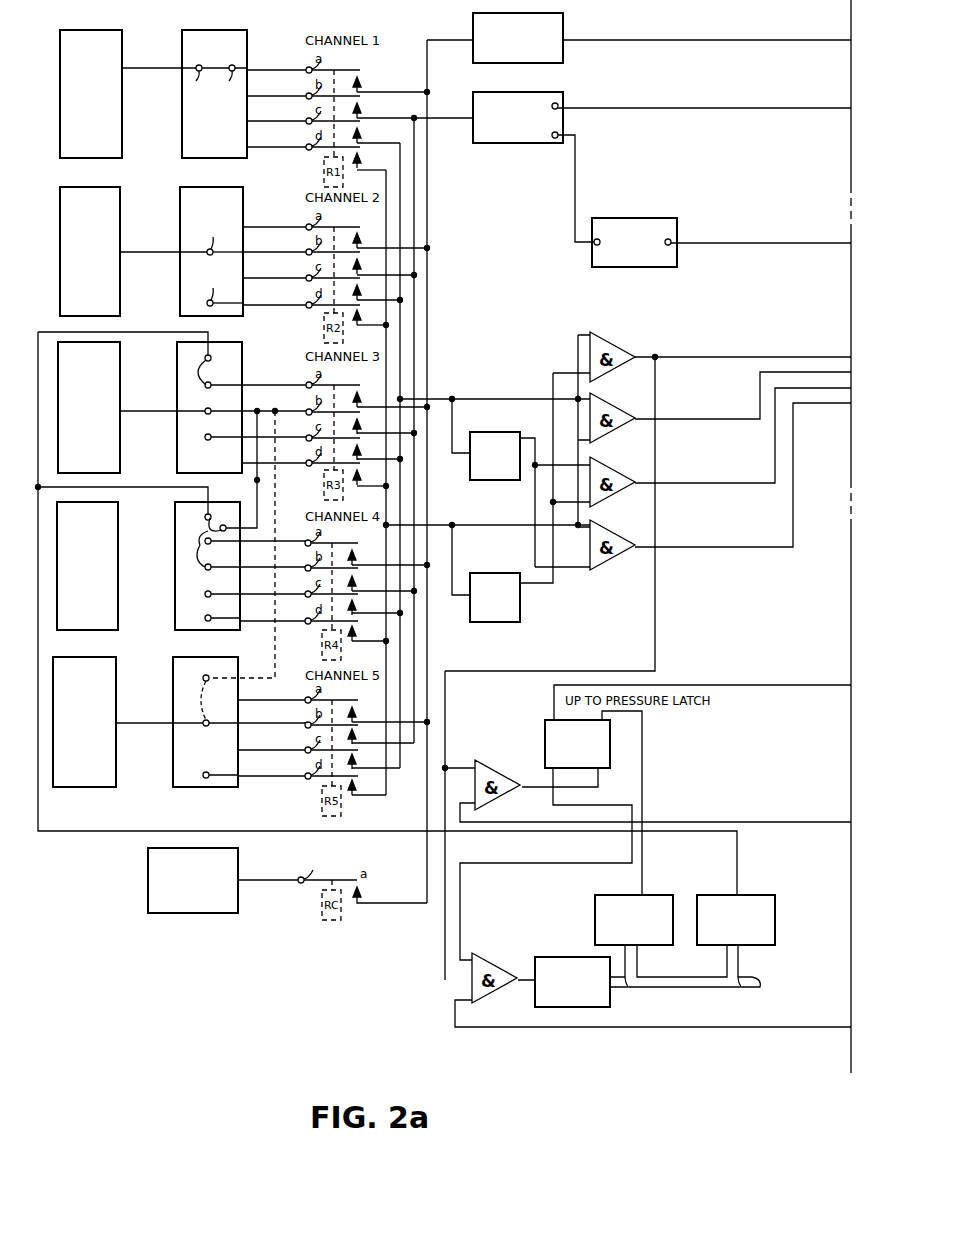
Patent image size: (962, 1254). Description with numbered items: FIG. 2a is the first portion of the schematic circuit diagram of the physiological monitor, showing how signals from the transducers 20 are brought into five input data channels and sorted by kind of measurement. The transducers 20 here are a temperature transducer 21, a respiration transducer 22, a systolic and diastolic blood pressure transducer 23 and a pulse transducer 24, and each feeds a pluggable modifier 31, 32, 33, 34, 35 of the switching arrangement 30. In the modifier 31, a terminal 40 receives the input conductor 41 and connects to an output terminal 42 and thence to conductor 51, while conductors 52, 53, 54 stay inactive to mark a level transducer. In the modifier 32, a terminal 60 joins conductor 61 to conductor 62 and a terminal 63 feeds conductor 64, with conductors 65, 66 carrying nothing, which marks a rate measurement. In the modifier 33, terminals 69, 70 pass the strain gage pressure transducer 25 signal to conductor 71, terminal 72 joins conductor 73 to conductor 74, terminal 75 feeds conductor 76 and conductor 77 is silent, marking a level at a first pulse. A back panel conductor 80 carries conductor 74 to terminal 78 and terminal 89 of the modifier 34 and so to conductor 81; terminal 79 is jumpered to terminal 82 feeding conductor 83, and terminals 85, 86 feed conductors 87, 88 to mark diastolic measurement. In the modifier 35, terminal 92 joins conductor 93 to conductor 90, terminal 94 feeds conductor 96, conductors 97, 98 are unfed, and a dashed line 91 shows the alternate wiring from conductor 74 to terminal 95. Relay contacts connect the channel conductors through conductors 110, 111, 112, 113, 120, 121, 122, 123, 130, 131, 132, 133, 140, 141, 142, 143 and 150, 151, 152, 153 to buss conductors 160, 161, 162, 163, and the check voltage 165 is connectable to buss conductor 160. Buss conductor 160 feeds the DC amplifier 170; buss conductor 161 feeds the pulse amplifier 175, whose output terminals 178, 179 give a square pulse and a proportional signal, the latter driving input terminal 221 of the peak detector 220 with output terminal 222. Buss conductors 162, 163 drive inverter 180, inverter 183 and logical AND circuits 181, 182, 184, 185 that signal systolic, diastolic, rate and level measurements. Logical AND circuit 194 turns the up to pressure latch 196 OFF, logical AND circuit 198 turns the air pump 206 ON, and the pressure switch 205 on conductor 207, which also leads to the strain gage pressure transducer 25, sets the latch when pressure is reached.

The transducers 20 is at (40, 330).
The temperature transducer 21 is at (124, 32).
The respiration transducer 22 is at (118, 298).
The systolic and diastolic blood pressure transducer 23 is at (122, 368).
The pulse transducer 24 is at (117, 758).
The strain gage pressure transducer 25 is at (776, 897).
The switching arrangement 30 is at (157, 778).
The modifier 31 is at (248, 32).
The modifier 32 is at (246, 188).
The modifier 33 is at (244, 362).
The modifier 34 is at (175, 600).
The modifier 35 is at (220, 788).
The terminal 40 is at (192, 84).
The input conductor 41 is at (146, 67).
The output terminal 42 is at (225, 84).
The conductor 51 is at (277, 68).
The conductor 52 is at (277, 94).
The conductor 53 is at (277, 119).
The conductor 54 is at (277, 145).
The terminal 60 is at (216, 237).
The conductor 61 is at (141, 251).
The conductor 62 is at (274, 252).
The terminal 63 is at (216, 288).
The conductor 64 is at (274, 305).
The conductor 65 is at (274, 227).
The conductor 66 is at (274, 278).
The terminal 69 is at (212, 357).
The terminal 70 is at (244, 376).
The data channel conductor 71 is at (275, 385).
The terminal 72 is at (212, 408).
The conductor 73 is at (150, 410).
The data channel conductor 74 is at (277, 410).
The terminal 75 is at (212, 435).
The data channel conductor 76 is at (240, 445).
The data channel conductor 77 is at (282, 462).
The terminal 78 is at (224, 525).
The terminal 79 is at (205, 517).
The conductor 80 is at (256, 487).
The data channel conductor 81 is at (270, 570).
The terminal 82 is at (210, 544).
The data channel conductor 83 is at (272, 545).
The terminal 85 is at (205, 595).
The terminal 86 is at (205, 619).
The data channel conductor 87 is at (274, 596).
The data channel conductor 88 is at (274, 623).
The terminal 89 is at (205, 569).
The data channel conductor 90 is at (268, 724).
The dashed line 91 is at (276, 642).
The terminal 92 is at (208, 720).
The conductor 93 is at (143, 721).
The terminal 94 is at (208, 772).
The terminal 95 is at (210, 675).
The data channel conductor 96 is at (260, 777).
The data channel conductor 97 is at (267, 699).
The data channel conductor 98 is at (268, 749).
The conductor 110 is at (394, 92).
The conductor 111 is at (392, 118).
The conductor 112 is at (394, 143).
The conductor 113 is at (394, 170).
The conductor 120 is at (394, 248).
The conductor 121 is at (392, 275).
The conductor 122 is at (394, 300).
The conductor 123 is at (394, 325).
The conductor 130 is at (394, 407).
The conductor 131 is at (392, 433).
The conductor 132 is at (394, 459).
The conductor 133 is at (394, 486).
The conductor 140 is at (391, 565).
The conductor 141 is at (389, 591).
The conductor 142 is at (391, 613).
The conductor 143 is at (391, 641).
The conductor 150 is at (391, 722).
The conductor 151 is at (383, 745).
The conductor 152 is at (383, 770).
The conductor 153 is at (372, 796).
The buss conductor 160 is at (427, 175).
The buss conductor 161 is at (414, 203).
The buss conductor 162 is at (400, 325).
The buss conductor 163 is at (386, 358).
The check voltage block 165 is at (240, 905).
The DC amplifier 170 is at (565, 30).
The pulse amplifier 175 is at (522, 145).
The output terminal 178 is at (558, 105).
The output terminal 179 is at (558, 134).
The inverter 180 is at (508, 482).
The logical AND circuit 181 is at (605, 338).
The logical AND circuit 182 is at (605, 400).
The inverter 183 is at (486, 573).
The logical AND circuit 184 is at (605, 528).
The logical AND circuit 185 is at (605, 464).
The logical AND circuit 194 is at (500, 772).
The up to pressure latch 196 is at (545, 730).
The logical AND circuit 198 is at (503, 990).
The pressure switch 205 is at (593, 896).
The air pump 206 is at (610, 1007).
The conductor 207 is at (753, 993).
The peak detector 220 is at (624, 217).
The input terminal 221 is at (594, 246).
The output terminal 222 is at (671, 240).